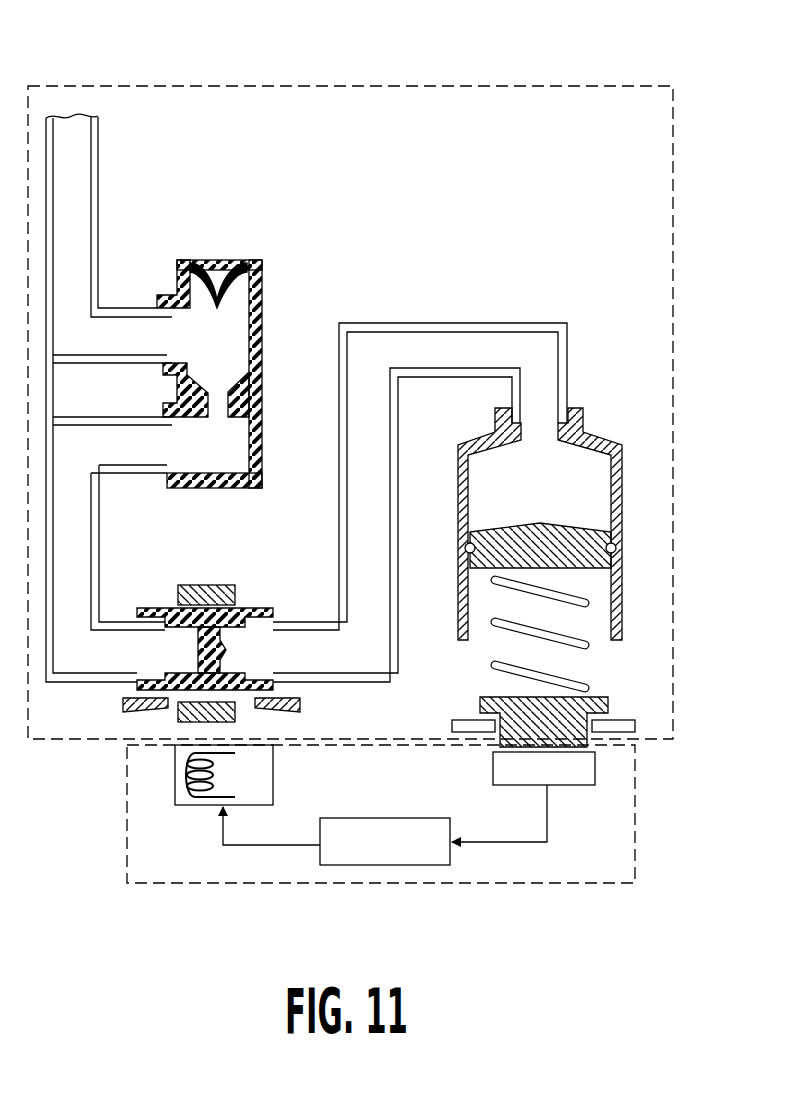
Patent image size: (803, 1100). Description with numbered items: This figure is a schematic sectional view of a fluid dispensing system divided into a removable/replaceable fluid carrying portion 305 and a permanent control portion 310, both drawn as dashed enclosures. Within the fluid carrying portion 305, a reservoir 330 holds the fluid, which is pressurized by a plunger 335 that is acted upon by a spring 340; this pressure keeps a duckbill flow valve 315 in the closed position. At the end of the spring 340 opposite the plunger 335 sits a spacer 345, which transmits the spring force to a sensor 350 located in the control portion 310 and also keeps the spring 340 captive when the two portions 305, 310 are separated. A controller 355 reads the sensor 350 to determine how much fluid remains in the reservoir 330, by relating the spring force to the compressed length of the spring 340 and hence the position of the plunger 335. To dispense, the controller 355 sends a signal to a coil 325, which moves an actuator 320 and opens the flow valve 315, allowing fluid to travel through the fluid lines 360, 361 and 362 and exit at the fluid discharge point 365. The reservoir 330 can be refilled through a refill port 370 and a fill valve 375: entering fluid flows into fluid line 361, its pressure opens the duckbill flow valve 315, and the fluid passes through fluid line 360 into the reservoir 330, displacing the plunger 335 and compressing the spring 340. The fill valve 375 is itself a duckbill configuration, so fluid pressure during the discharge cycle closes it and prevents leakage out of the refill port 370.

The removable/replaceable fluid carrying portion 305 is at (512, 78).
The permanent control portion 310 is at (125, 848).
The duckbill flow valve 315 is at (245, 608).
The actuator 320 is at (205, 585).
The coil 325 is at (273, 778).
The reservoir 330 is at (598, 433).
The plunger 335 is at (503, 527).
The spring 340 is at (563, 648).
The spacer 345 is at (607, 703).
The sensor 350 is at (572, 773).
The controller 355 is at (397, 818).
The fluid line 360 is at (470, 322).
The fluid line 361 is at (98, 540).
The fluid line 362 is at (98, 192).
The fluid discharge point 365 is at (70, 116).
The refill port 370 is at (263, 290).
The fill valve 375 is at (252, 260).